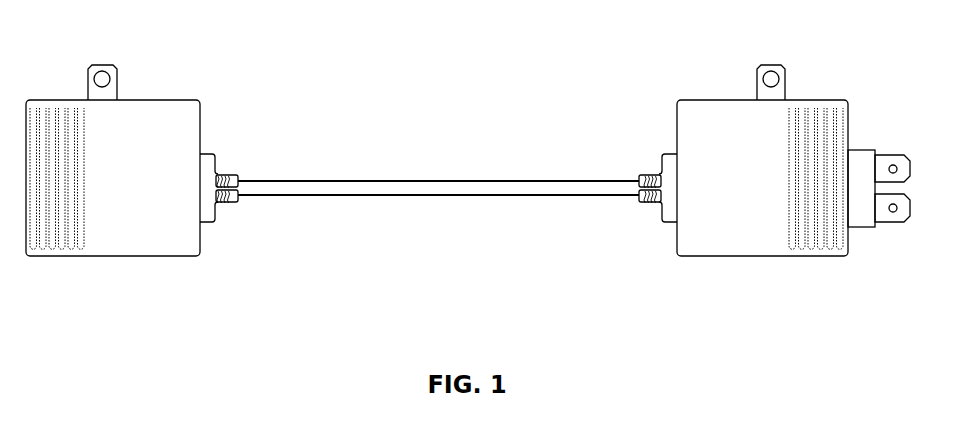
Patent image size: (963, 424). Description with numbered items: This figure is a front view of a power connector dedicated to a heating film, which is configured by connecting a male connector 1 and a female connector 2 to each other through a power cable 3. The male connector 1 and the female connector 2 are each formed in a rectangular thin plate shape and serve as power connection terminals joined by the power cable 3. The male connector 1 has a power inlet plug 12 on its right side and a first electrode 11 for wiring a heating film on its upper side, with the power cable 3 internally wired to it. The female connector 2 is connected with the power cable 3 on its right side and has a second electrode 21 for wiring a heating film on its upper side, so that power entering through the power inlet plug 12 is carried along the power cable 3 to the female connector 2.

The male connector 1 is at (750, 256).
The first electrode 11 is at (775, 65).
The power inlet plug 12 is at (890, 153).
The female connector 2 is at (149, 257).
The second electrode 21 is at (99, 65).
The power cable 3 is at (450, 196).